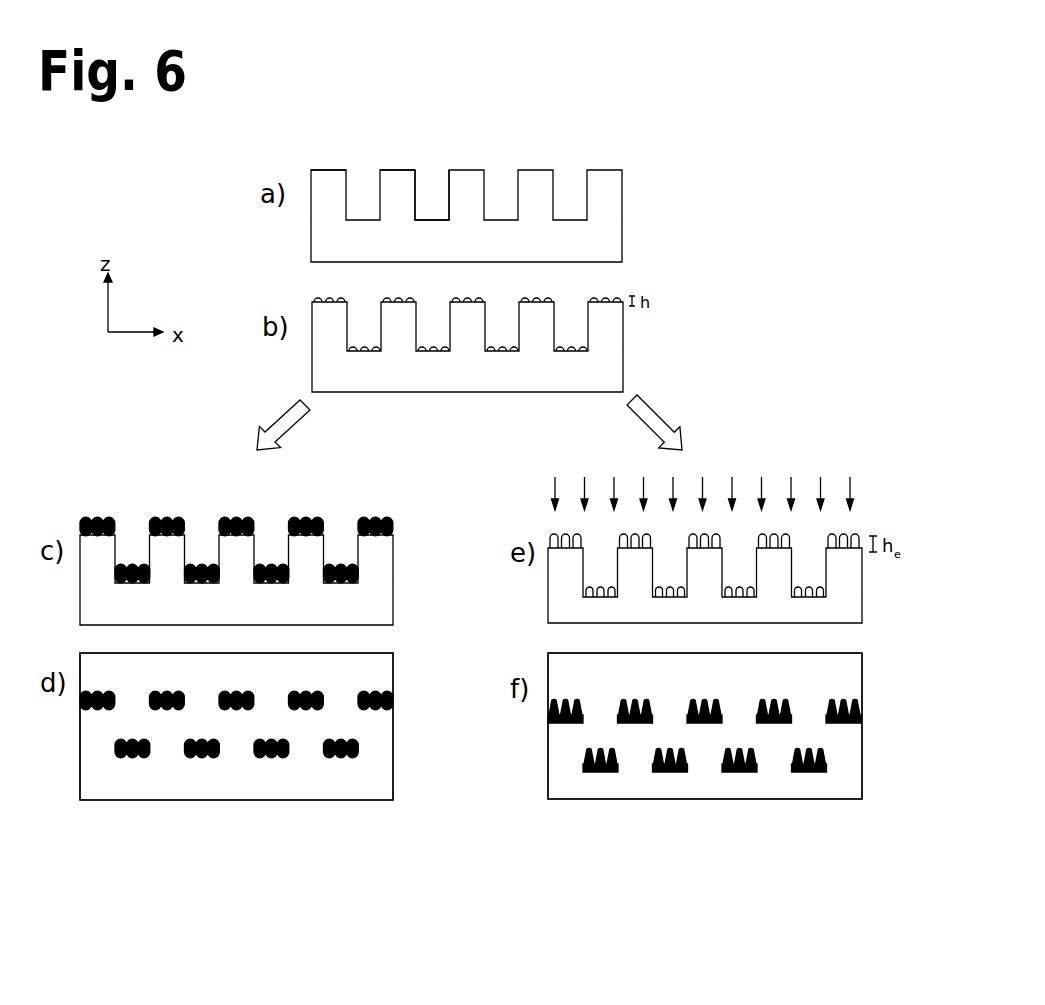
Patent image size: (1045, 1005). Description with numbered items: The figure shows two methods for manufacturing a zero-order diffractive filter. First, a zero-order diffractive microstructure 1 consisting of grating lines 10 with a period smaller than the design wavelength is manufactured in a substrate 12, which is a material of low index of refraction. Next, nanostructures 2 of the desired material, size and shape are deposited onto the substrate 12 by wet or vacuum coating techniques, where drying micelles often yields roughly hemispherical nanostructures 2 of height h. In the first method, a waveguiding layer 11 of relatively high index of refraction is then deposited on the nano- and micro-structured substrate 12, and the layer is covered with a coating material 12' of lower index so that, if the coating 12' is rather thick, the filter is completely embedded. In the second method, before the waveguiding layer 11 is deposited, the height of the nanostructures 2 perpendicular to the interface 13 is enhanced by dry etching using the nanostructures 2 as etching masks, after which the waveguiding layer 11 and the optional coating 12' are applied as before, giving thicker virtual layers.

The diffractive microstructure 1 is at (650, 163).
The grating lines 10 is at (390, 165).
The interface 13 is at (470, 162).
The nanostructures 2 is at (610, 292).
The substrate 12 is at (489, 626).
The waveguiding layer 11 is at (377, 520).
The coating material 12' is at (514, 701).